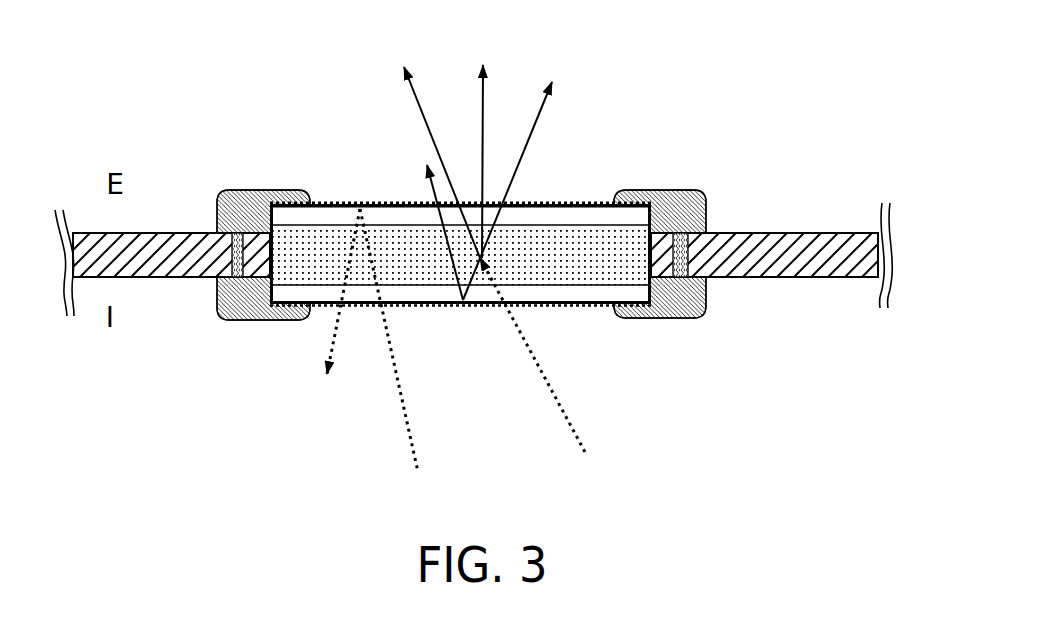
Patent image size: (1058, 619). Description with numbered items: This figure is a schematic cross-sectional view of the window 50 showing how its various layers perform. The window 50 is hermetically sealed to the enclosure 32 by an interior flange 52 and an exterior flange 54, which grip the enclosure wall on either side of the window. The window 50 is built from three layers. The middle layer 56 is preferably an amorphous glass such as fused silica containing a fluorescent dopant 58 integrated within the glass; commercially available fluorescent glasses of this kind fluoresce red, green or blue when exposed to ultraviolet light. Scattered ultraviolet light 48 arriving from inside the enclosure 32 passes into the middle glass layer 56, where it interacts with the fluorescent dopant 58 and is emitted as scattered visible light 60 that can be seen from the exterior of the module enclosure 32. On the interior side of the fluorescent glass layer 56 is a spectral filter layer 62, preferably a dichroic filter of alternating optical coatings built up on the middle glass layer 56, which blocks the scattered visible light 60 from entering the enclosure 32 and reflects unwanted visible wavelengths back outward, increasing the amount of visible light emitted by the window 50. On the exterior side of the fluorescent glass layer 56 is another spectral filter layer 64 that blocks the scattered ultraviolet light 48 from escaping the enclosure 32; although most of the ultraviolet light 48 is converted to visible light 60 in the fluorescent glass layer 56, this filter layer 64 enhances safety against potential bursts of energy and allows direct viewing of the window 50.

The enclosure 32 is at (820, 232).
The scattered ultraviolet light 48 is at (335, 332).
The window 50 is at (332, 203).
The interior flange 52 is at (694, 304).
The exterior flange 54 is at (697, 190).
The middle layer 56 is at (566, 268).
The fluorescent dopant 58 is at (587, 242).
The scattered visible light 60 is at (430, 192).
The spectral filter layer 62 is at (420, 291).
The spectral filter layer 64 is at (603, 212).